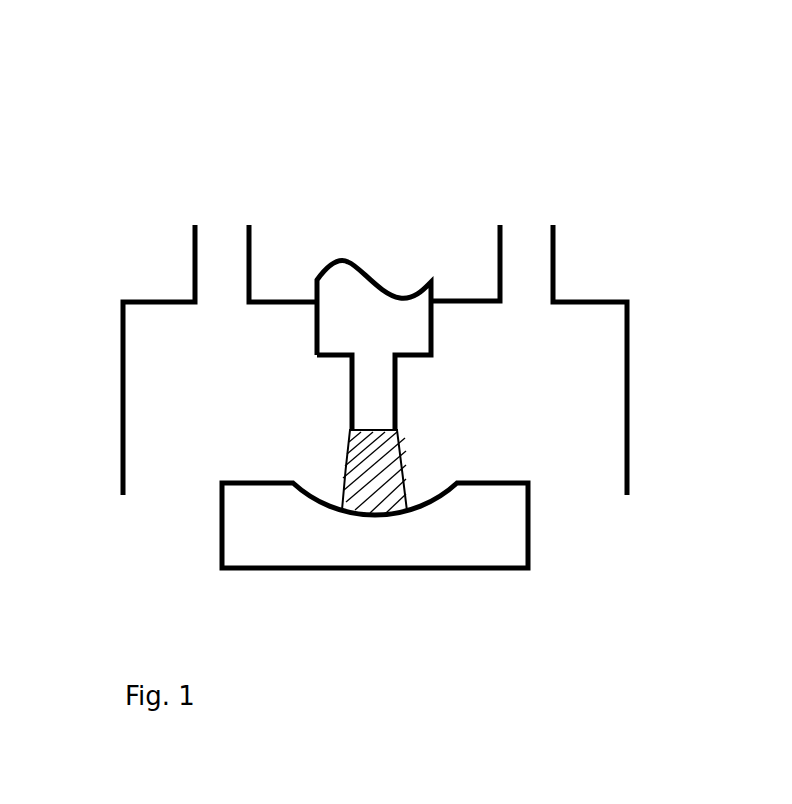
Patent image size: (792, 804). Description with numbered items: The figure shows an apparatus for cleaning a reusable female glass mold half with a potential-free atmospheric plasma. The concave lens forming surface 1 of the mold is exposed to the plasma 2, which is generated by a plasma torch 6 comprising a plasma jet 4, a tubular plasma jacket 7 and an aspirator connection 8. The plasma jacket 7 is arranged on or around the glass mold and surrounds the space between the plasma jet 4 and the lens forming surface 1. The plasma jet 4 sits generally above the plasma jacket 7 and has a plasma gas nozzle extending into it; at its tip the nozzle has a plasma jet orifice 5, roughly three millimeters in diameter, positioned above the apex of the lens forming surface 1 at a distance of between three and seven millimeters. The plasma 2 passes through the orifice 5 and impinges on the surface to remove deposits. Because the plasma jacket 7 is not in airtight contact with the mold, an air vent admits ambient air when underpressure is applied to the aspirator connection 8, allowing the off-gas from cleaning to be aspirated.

The lens forming surface 1 is at (420, 513).
The plasma 2 is at (360, 473).
The plasma jet 4 is at (340, 287).
The plasma jet orifice 5 is at (372, 432).
The plasma torch 6 is at (603, 268).
The plasma jacket 7 is at (627, 380).
The aspirator connection 8 is at (223, 243).